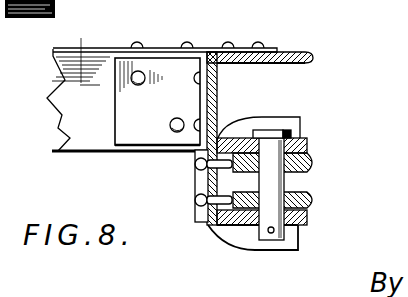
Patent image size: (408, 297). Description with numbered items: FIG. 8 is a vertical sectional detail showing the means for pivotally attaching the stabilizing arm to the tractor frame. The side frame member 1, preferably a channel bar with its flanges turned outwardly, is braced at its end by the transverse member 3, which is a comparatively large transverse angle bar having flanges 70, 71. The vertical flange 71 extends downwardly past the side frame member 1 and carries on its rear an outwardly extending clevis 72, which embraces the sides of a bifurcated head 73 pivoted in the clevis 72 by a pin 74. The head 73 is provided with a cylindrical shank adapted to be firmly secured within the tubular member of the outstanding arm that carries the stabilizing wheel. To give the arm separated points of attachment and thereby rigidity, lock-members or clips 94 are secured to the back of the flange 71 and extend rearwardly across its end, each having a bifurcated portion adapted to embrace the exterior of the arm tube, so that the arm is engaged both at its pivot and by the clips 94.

The side frame member 1 is at (162, 94).
The transverse member 3 is at (271, 121).
The flange 70 is at (293, 51).
The vertical flange 71 is at (217, 106).
The clevis 72 is at (312, 222).
The bifurcated head 73 is at (310, 212).
The pin 74 is at (284, 183).
The lock-member or clip 94 is at (293, 125).